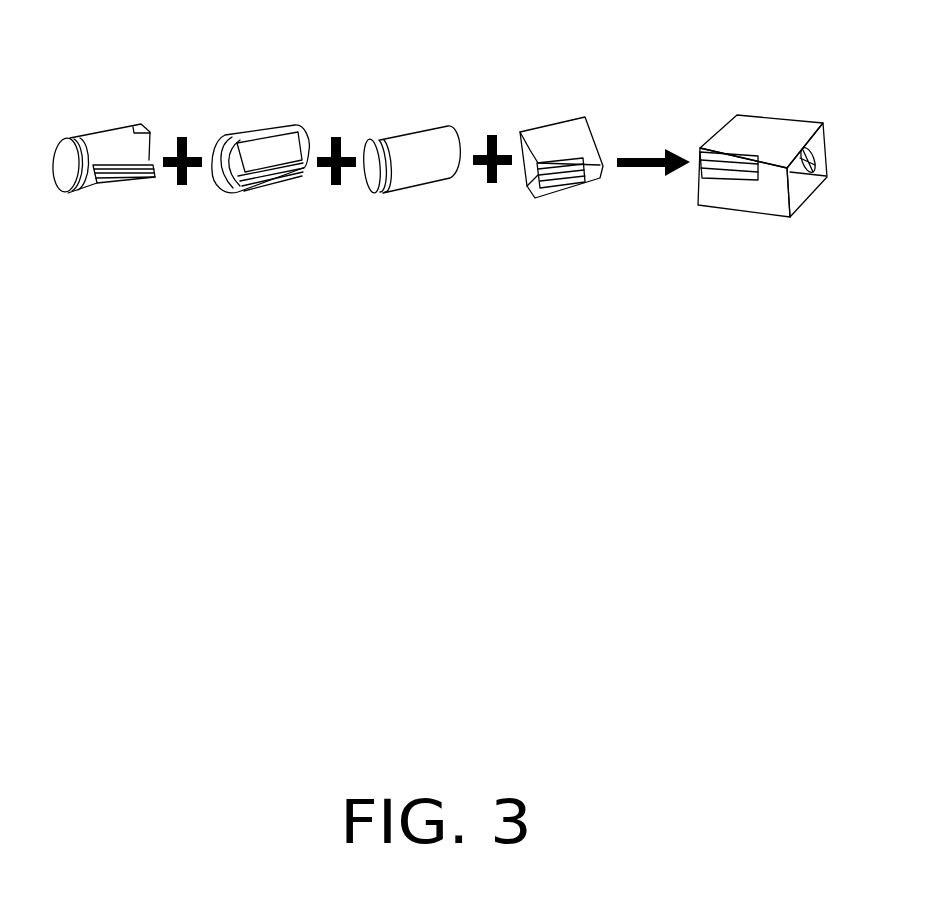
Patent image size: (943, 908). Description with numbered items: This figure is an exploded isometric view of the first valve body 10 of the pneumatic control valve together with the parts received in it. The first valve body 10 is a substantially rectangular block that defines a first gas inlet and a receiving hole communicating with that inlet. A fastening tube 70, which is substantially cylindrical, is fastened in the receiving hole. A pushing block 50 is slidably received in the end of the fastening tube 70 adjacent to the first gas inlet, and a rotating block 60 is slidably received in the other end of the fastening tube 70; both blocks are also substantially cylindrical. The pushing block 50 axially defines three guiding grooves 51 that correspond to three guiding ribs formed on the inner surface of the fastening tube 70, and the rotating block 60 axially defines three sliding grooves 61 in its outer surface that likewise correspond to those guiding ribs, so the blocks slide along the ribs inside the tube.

The first valve body 10 is at (560, 143).
The pushing block 50 is at (112, 148).
The guiding grooves 51 is at (118, 170).
The rotating block 60 is at (267, 133).
The sliding grooves 61 is at (283, 170).
The fastening tube 70 is at (415, 160).